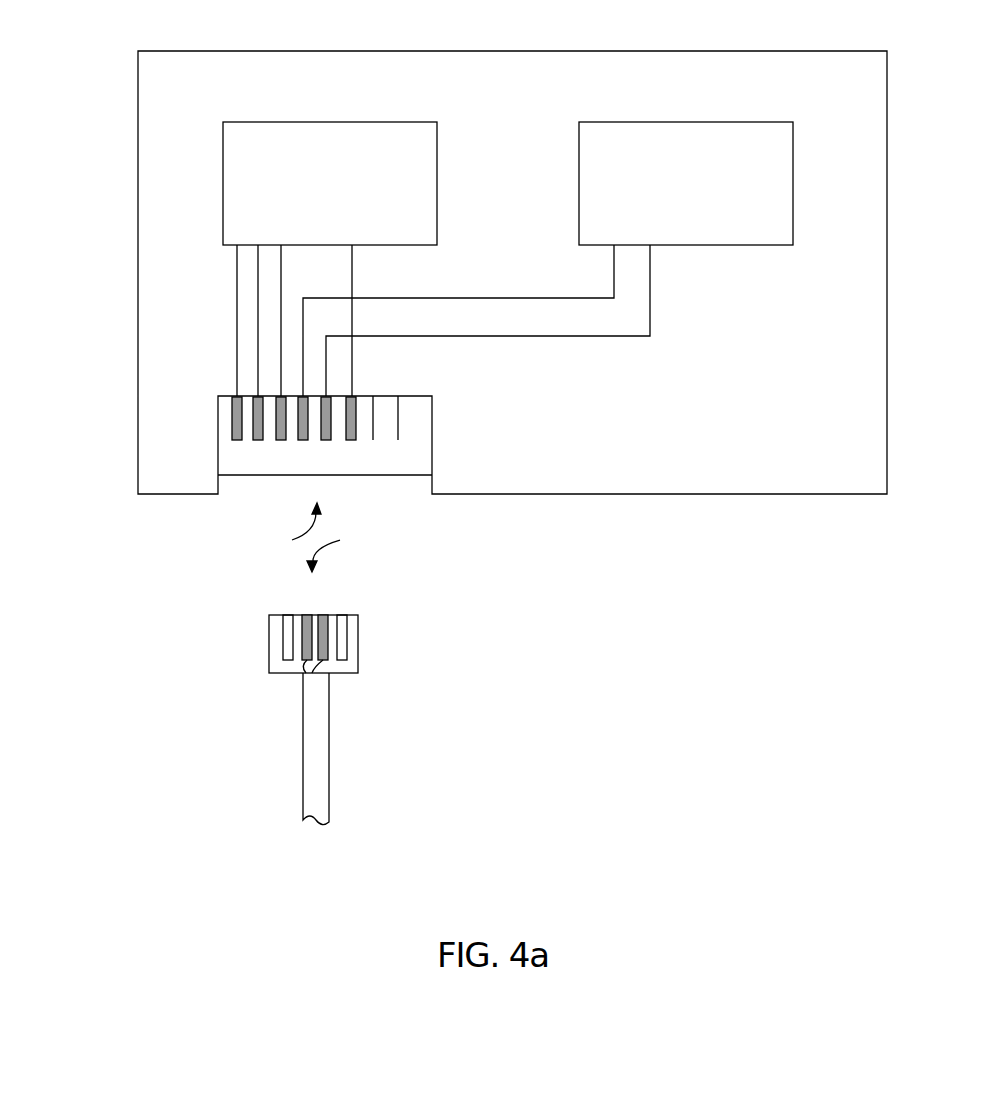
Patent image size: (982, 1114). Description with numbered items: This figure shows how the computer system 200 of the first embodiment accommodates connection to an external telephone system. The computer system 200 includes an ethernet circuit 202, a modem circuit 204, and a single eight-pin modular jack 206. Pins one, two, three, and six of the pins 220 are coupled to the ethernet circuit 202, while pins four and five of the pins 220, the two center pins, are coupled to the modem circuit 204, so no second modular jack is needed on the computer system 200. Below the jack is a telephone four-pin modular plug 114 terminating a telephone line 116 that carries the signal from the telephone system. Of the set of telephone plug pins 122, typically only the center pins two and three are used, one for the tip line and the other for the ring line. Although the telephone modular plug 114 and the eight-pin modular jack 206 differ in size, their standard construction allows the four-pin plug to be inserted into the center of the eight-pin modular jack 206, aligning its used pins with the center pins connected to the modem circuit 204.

The computer system 200 is at (138, 225).
The ethernet circuit 202 is at (400, 227).
The modem circuit 204 is at (757, 227).
The 8-pin modular jack 206 is at (432, 423).
The 8-pin modular jack pins 220 is at (284, 530).
The telephone plug pins 122 is at (342, 549).
The telephone 4-pin modular plug 114 is at (358, 643).
The telephone line 116 is at (329, 738).